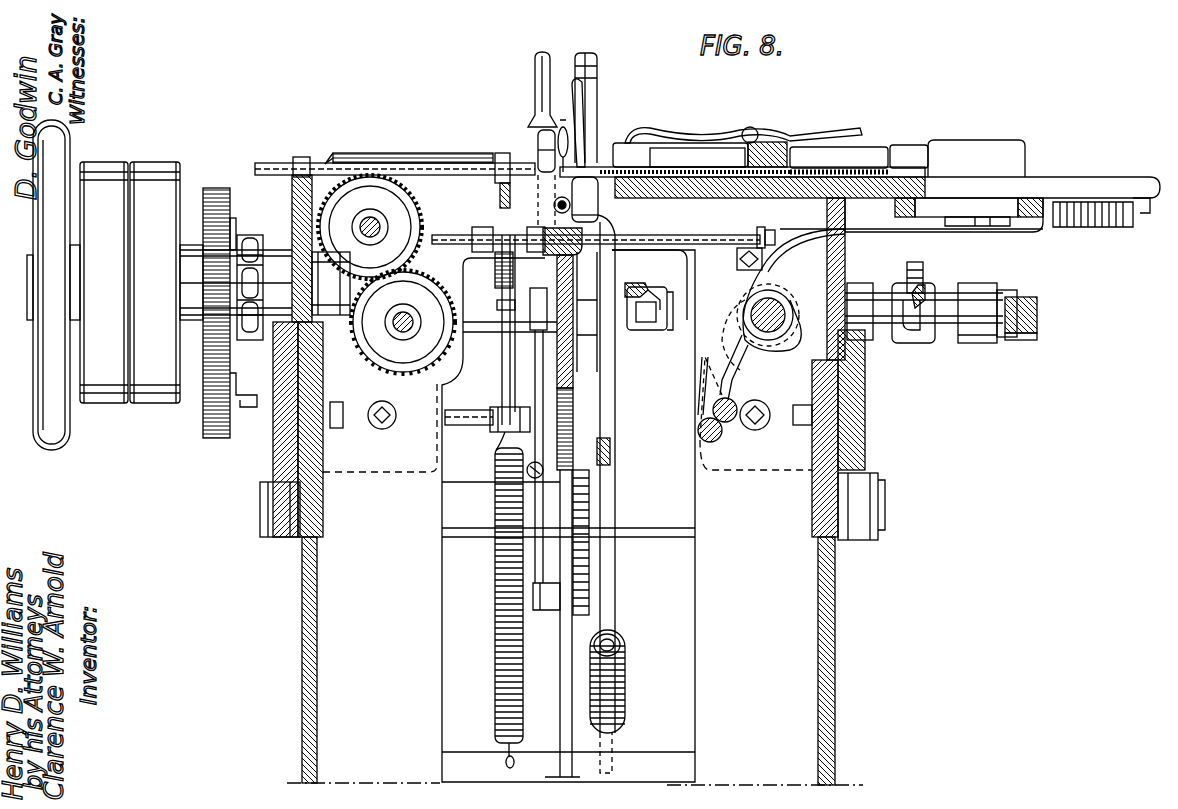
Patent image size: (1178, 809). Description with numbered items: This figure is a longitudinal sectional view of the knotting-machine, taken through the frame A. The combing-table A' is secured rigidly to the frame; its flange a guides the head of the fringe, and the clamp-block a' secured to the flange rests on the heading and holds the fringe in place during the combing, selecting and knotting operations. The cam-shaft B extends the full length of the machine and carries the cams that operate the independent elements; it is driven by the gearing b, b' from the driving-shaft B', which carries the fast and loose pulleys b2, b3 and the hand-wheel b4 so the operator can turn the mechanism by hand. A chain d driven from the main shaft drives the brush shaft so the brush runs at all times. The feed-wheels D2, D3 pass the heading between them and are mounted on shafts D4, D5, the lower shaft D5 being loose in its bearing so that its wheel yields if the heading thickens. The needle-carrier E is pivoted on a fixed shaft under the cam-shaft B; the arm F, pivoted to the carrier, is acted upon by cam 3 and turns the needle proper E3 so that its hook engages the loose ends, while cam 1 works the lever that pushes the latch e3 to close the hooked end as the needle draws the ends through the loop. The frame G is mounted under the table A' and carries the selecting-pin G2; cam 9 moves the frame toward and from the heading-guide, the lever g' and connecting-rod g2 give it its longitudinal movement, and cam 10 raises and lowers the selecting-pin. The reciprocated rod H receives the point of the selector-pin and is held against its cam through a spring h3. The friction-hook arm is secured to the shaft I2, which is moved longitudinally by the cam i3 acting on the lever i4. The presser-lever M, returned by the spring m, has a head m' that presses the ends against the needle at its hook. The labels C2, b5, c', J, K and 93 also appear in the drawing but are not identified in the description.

The frame A is at (572, 480).
The combing-table A' is at (860, 192).
The flange a is at (976, 158).
The clamp-block a' is at (909, 156).
The clamp block C2 is at (750, 149).
The cam-shaft B is at (924, 303).
The driving-shaft B' is at (226, 282).
The gear b is at (191, 275).
The gear wheel b' is at (230, 313).
The fast pulley b2 is at (155, 282).
The loose pulley b3 is at (104, 282).
The hand-wheel b4 is at (53, 285).
The collar b5 is at (1010, 285).
The cam collar c' is at (1031, 318).
The chain d is at (254, 282).
The feed-wheel D2 is at (370, 227).
The feed-wheel D3 is at (403, 322).
The shaft D4 is at (380, 227).
The lower shaft D5 is at (413, 321).
The needle-carrier E is at (585, 404).
The needle E3 is at (563, 126).
The latch e3 is at (554, 209).
The arm F is at (495, 587).
The frame G is at (997, 215).
The selecting-pin G2 is at (586, 108).
The lever g' is at (717, 406).
The connecting-rod g2 is at (884, 231).
The reciprocated rod H is at (520, 168).
The spring h3 is at (395, 152).
The shaft I2 is at (603, 232).
The cam i3 is at (775, 298).
The lever i4 is at (700, 380).
The presser bar J is at (598, 72).
The awl bar K is at (534, 80).
The presser-lever M is at (615, 494).
The spring m is at (618, 681).
The head m' is at (585, 199).
The cam 1 is at (567, 516).
The cam 3 is at (527, 422).
The cam 9 is at (649, 297).
The cam 10 is at (925, 285).
The clutch block 93 is at (913, 313).